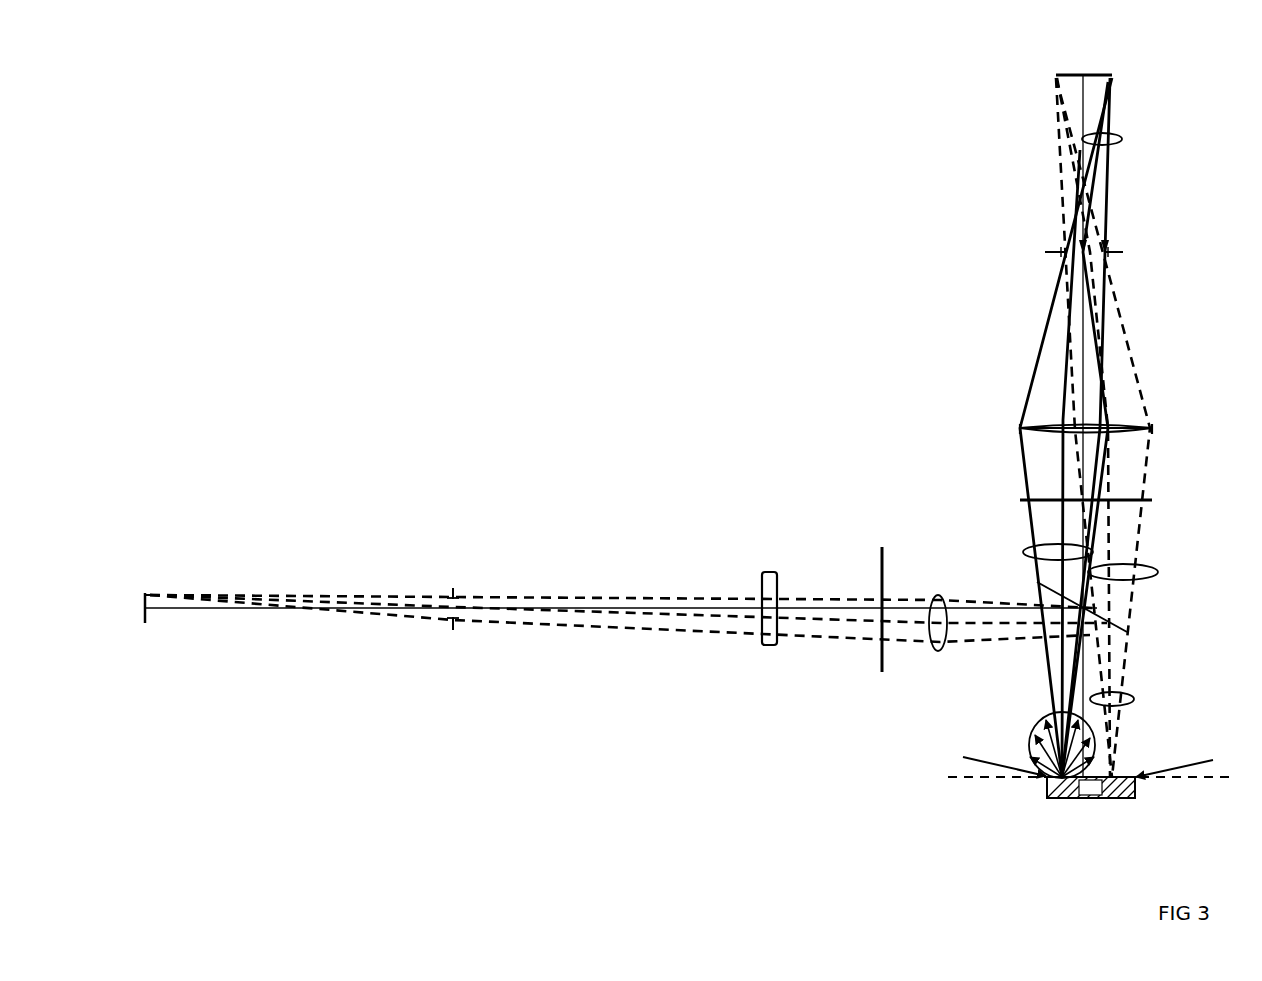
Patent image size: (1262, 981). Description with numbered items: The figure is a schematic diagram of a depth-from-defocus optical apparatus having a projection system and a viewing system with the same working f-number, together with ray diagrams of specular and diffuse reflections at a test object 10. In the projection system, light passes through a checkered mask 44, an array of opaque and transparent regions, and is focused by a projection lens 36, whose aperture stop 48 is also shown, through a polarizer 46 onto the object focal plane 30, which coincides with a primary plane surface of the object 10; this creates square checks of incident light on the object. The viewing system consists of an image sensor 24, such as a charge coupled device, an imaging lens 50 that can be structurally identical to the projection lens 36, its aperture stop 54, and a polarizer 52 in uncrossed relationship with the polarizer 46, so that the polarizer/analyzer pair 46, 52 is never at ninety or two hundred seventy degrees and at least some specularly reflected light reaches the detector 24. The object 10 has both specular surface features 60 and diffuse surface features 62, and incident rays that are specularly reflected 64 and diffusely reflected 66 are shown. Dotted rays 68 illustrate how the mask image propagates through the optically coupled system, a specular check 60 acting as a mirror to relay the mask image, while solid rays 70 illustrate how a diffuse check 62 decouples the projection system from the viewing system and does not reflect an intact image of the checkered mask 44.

The object 10 is at (1102, 798).
The image sensor 24 is at (145, 596).
The focal plane 30 is at (972, 781).
The projection lens 36 is at (1142, 428).
The checkered mask 44 is at (1068, 73).
The polarizer 46 is at (1148, 500).
The aperture stop 48 is at (1117, 250).
The imaging lens 50 is at (770, 572).
The polarizer 52 is at (883, 590).
The aperture stop 54 is at (455, 593).
The specular surface features 60 is at (1191, 762).
The diffuse surface features 62 is at (988, 762).
The specularly reflected rays 64 is at (1134, 700).
The diffusely reflected rays 66 is at (1030, 737).
The dotted rays 68 is at (1158, 572).
The solid rays 70 is at (1122, 139).